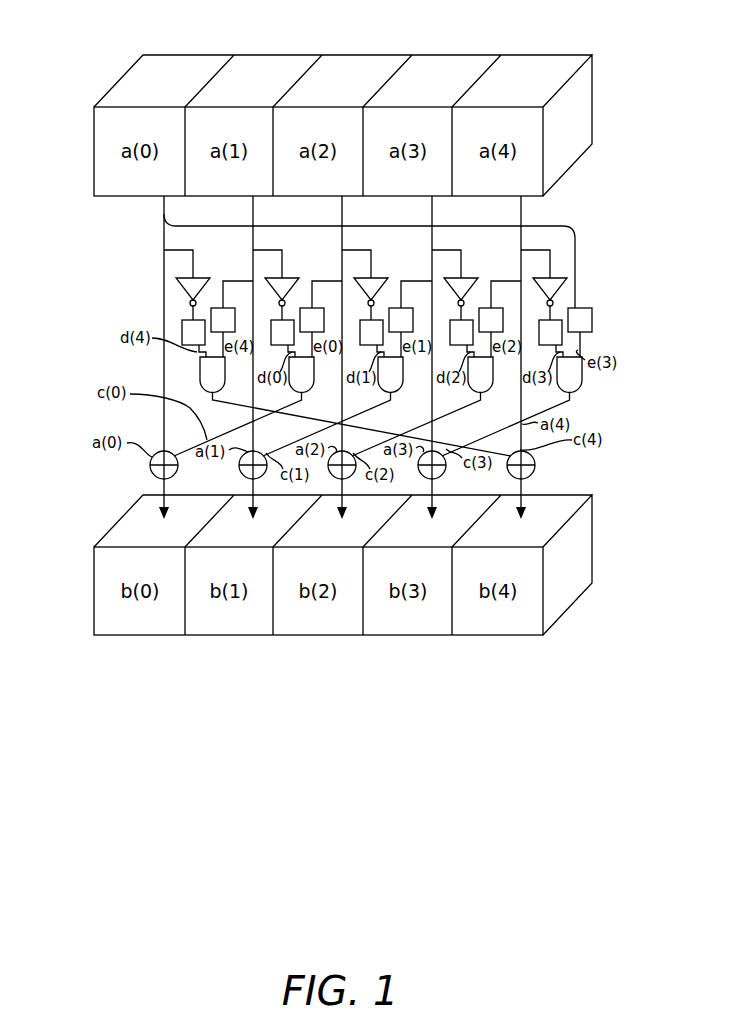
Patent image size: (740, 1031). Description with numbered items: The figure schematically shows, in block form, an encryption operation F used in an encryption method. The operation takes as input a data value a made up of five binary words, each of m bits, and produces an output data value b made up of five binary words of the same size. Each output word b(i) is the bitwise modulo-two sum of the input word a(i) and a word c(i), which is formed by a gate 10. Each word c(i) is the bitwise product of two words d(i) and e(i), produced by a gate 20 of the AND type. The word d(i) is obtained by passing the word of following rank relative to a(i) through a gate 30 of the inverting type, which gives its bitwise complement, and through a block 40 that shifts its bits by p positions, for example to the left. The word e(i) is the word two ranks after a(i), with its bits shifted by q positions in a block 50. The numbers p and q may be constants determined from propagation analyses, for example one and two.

The gate 10 is at (149, 466).
The gate of the AND type 20 is at (208, 376).
The gate of the inverting type 30 is at (183, 284).
The block 40 is at (183, 326).
The block 50 is at (218, 306).